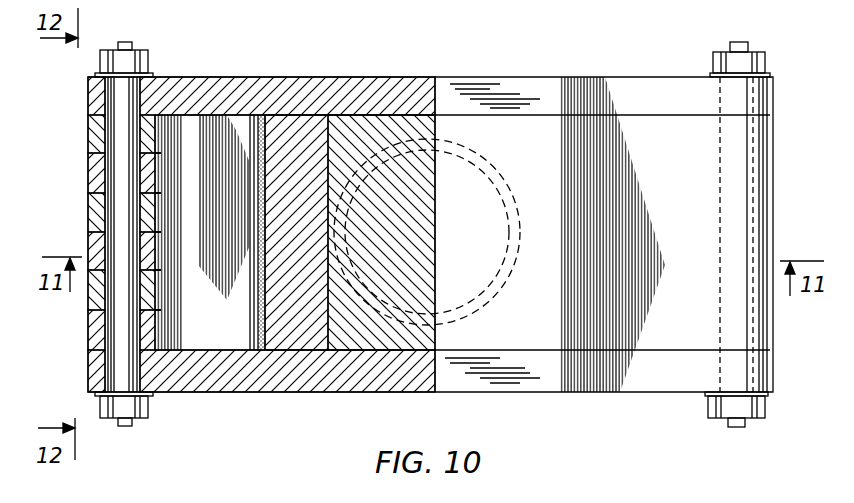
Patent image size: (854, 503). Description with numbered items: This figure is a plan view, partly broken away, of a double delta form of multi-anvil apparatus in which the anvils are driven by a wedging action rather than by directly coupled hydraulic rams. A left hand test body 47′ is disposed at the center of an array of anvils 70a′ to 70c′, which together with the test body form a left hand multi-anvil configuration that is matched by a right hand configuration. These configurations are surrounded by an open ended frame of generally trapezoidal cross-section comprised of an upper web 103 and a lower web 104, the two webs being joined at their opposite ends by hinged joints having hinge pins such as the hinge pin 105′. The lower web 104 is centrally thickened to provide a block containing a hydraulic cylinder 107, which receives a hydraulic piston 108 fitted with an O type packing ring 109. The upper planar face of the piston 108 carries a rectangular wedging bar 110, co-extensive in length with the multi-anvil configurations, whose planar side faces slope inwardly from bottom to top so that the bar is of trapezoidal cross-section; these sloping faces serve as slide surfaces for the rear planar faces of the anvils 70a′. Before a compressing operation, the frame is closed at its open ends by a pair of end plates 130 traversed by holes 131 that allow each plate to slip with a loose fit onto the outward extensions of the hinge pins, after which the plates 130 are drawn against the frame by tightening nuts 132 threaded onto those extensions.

The nut 132 is at (150, 62).
The hole 131 is at (115, 95).
The anvil 70c′ is at (256, 110).
The left hand anvil 70a′ is at (300, 127).
The end plate 130 is at (553, 92).
The O type packing ring 109 is at (501, 272).
The hydraulic piston 108 is at (450, 312).
The hydraulic cylinder 107 is at (490, 298).
The upper web 103 is at (142, 323).
The hinge pin 105′ is at (96, 393).
The lower web 104 is at (185, 345).
The left hand test body 47′ is at (262, 350).
The wedging bar 110 is at (357, 345).